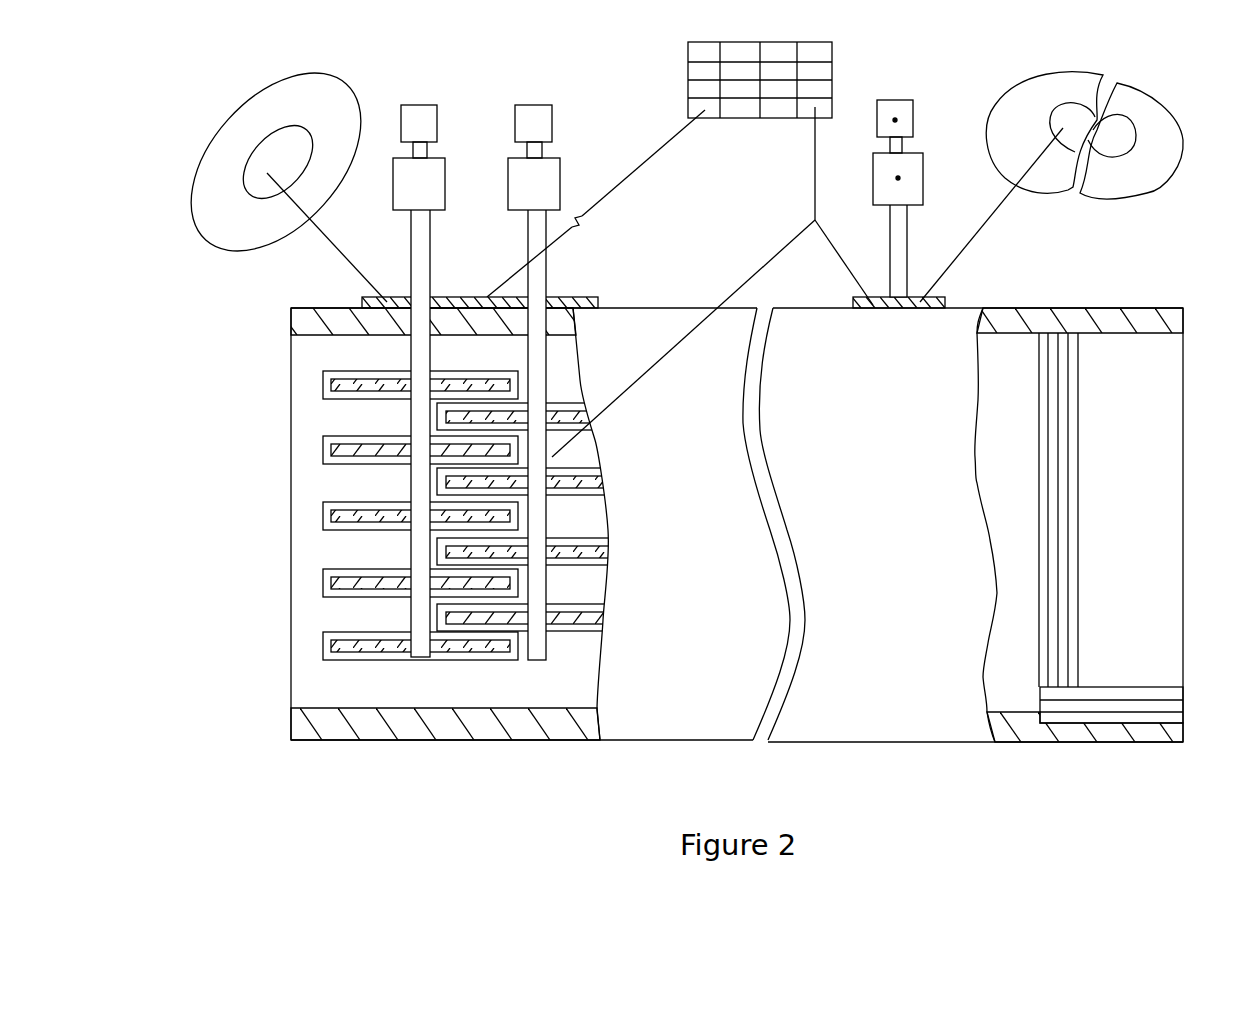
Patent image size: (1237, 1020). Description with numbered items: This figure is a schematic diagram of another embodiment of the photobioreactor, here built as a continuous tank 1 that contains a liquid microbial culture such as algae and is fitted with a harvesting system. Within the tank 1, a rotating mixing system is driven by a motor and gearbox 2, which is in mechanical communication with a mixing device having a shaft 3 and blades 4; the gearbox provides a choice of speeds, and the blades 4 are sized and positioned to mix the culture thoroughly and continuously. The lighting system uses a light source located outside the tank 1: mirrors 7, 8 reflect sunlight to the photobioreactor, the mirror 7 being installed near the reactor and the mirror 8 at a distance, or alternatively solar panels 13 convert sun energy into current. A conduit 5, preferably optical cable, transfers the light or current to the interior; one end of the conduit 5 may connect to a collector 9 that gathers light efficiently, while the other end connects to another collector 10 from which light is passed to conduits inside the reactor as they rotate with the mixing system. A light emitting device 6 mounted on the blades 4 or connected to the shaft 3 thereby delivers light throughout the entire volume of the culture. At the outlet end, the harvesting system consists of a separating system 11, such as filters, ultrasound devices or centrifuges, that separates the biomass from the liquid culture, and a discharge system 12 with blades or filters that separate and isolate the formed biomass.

The tank 1 is at (725, 647).
The motor and gearbox 2 is at (538, 173).
The shaft 3 is at (537, 283).
The blades 4 is at (550, 402).
The conduit 5 is at (1027, 237).
The light emitting device 6 is at (337, 580).
The mirror 7 is at (1145, 118).
The mirror 8 is at (230, 220).
The collector 9 is at (283, 162).
The collector 10 is at (580, 295).
The separating system 11 is at (1057, 510).
The discharge system 12 is at (1075, 715).
The solar panels 13 is at (815, 80).